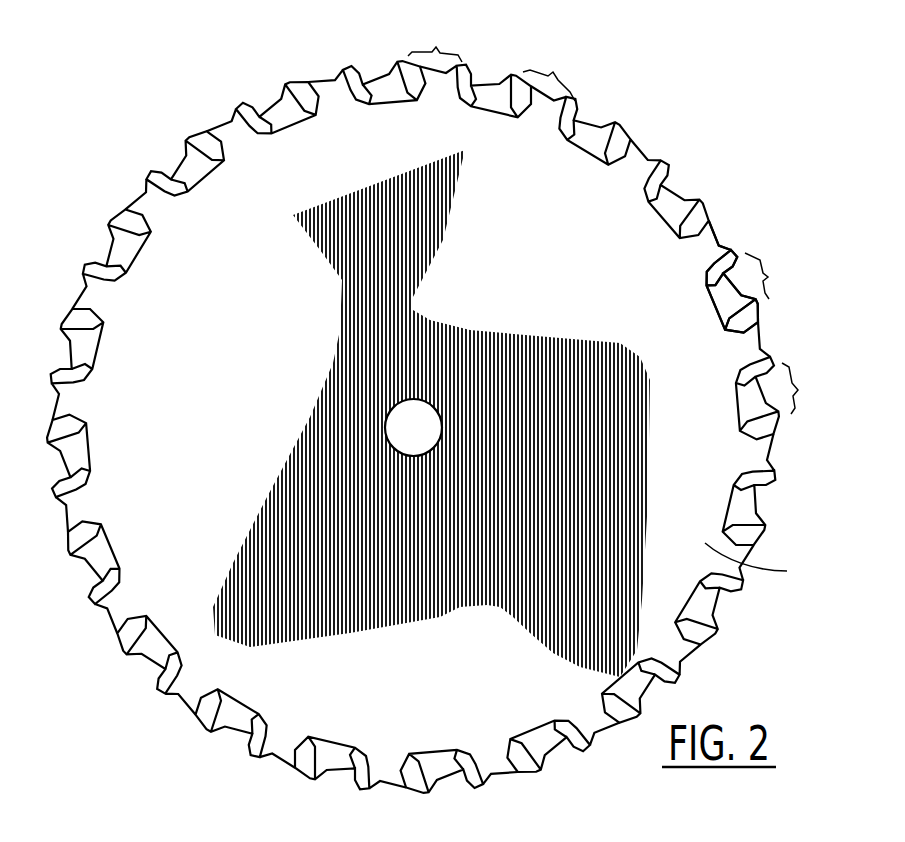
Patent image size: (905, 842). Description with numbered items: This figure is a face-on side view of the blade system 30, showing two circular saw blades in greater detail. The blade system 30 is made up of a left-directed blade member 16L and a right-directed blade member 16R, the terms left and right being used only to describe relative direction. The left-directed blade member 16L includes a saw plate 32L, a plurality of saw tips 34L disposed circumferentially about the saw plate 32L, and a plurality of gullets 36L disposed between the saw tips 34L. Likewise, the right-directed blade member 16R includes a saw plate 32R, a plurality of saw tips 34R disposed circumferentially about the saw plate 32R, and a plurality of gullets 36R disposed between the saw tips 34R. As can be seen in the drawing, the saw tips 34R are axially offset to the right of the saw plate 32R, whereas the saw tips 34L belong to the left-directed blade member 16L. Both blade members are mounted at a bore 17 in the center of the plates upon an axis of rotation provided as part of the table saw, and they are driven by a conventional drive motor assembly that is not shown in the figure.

The blade system 30 is at (158, 111).
The bore 17 is at (403, 423).
The saw plate 32L is at (580, 287).
The saw plate 32R is at (633, 234).
The saw tips 34R is at (352, 75).
The gullets 36R is at (494, 63).
The saw tips 34L is at (757, 321).
The gullets 36L is at (790, 333).
The left-directed blade member 16L is at (764, 564).
The right-directed blade member 16R is at (668, 582).